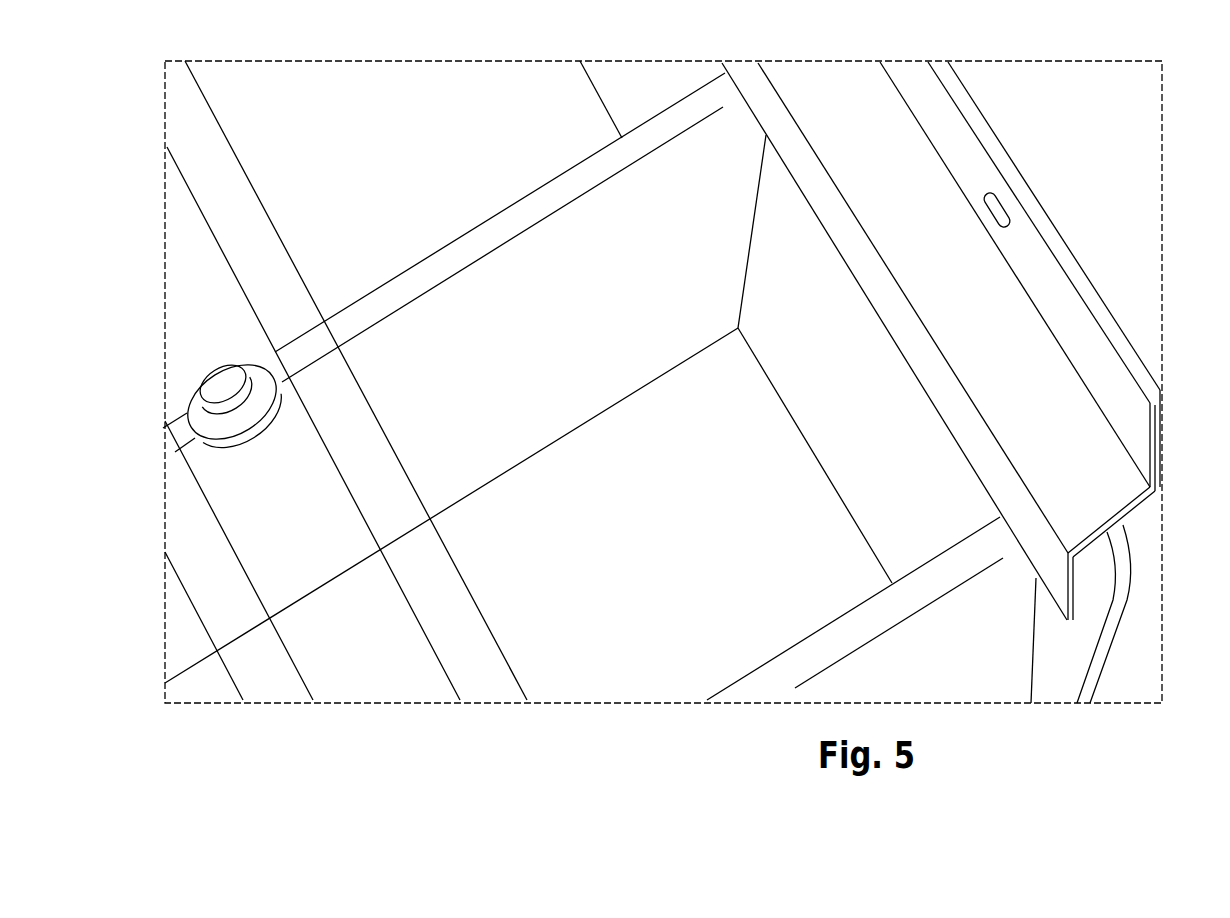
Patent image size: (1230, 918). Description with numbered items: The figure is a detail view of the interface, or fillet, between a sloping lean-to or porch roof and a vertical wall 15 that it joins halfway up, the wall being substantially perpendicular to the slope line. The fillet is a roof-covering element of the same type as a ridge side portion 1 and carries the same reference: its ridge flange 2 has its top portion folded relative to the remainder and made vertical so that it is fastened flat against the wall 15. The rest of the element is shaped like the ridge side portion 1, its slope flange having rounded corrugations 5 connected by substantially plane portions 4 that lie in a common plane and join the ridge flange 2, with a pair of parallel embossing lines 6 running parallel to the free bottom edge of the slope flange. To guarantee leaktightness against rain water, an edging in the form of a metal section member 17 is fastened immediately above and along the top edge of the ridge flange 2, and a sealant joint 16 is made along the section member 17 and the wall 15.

The ridge side portion 1 is at (997, 655).
The ridge flange 2 is at (853, 383).
The substantially plane portions 4 is at (528, 409).
The corrugations 5 is at (444, 268).
The embossing lines 6 is at (273, 666).
The vertical wall 15 is at (1015, 274).
The sealant joint 16 is at (1120, 334).
The metal section member 17 is at (1102, 467).